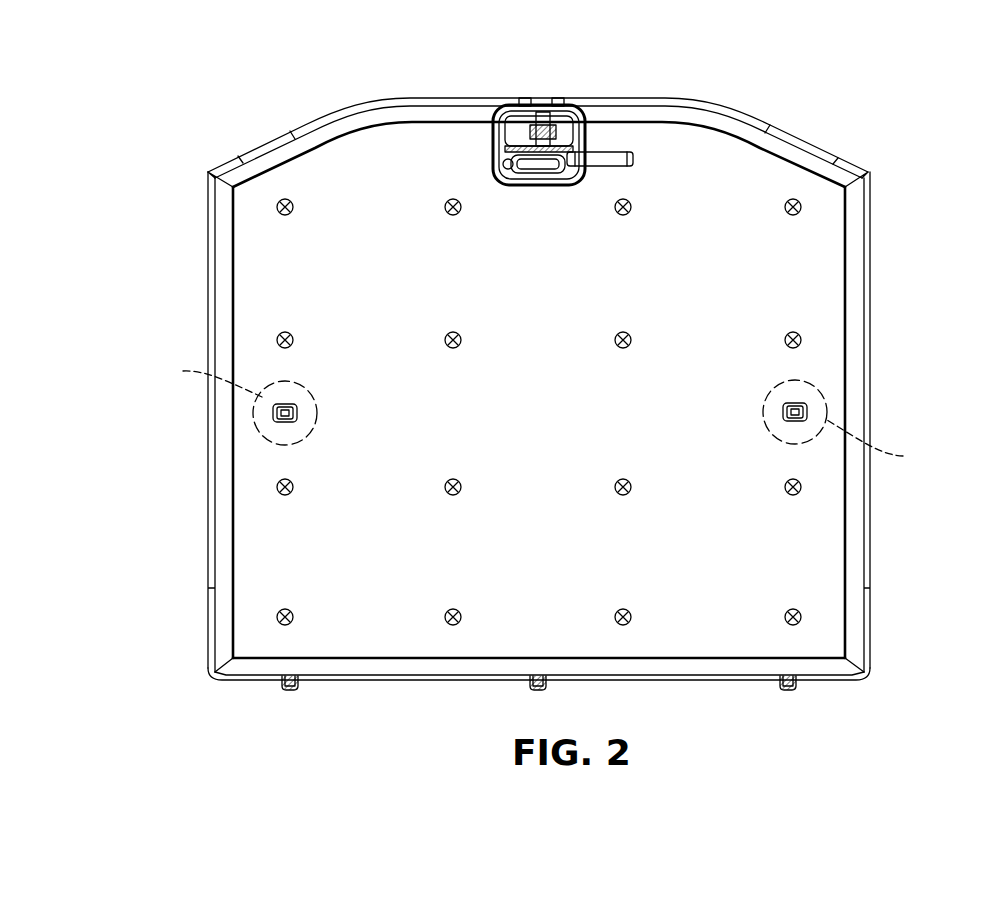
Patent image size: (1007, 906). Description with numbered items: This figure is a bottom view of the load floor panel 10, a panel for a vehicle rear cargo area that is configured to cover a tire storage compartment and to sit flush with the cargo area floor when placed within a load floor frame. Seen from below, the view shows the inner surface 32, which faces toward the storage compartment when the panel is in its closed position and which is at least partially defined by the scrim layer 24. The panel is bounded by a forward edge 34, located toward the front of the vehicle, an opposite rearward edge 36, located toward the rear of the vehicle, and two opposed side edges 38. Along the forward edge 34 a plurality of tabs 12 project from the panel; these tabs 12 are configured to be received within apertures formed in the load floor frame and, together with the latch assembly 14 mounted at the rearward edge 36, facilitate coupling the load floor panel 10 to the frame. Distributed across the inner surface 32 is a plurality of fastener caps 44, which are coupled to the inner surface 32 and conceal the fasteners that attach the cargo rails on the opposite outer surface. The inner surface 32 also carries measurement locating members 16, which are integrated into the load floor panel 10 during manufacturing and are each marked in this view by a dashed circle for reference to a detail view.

The load floor panel 10 is at (933, 133).
The tabs 12 is at (286, 691).
The latch assembly 14 is at (569, 98).
The measurement locating members 16 is at (278, 414).
The scrim layer 24 is at (275, 566).
The inner surface 32 is at (765, 588).
The forward edge 34 is at (425, 681).
The rearward edge 36 is at (605, 98).
The side edges 38 is at (208, 306).
The fastener caps 44 is at (803, 209).